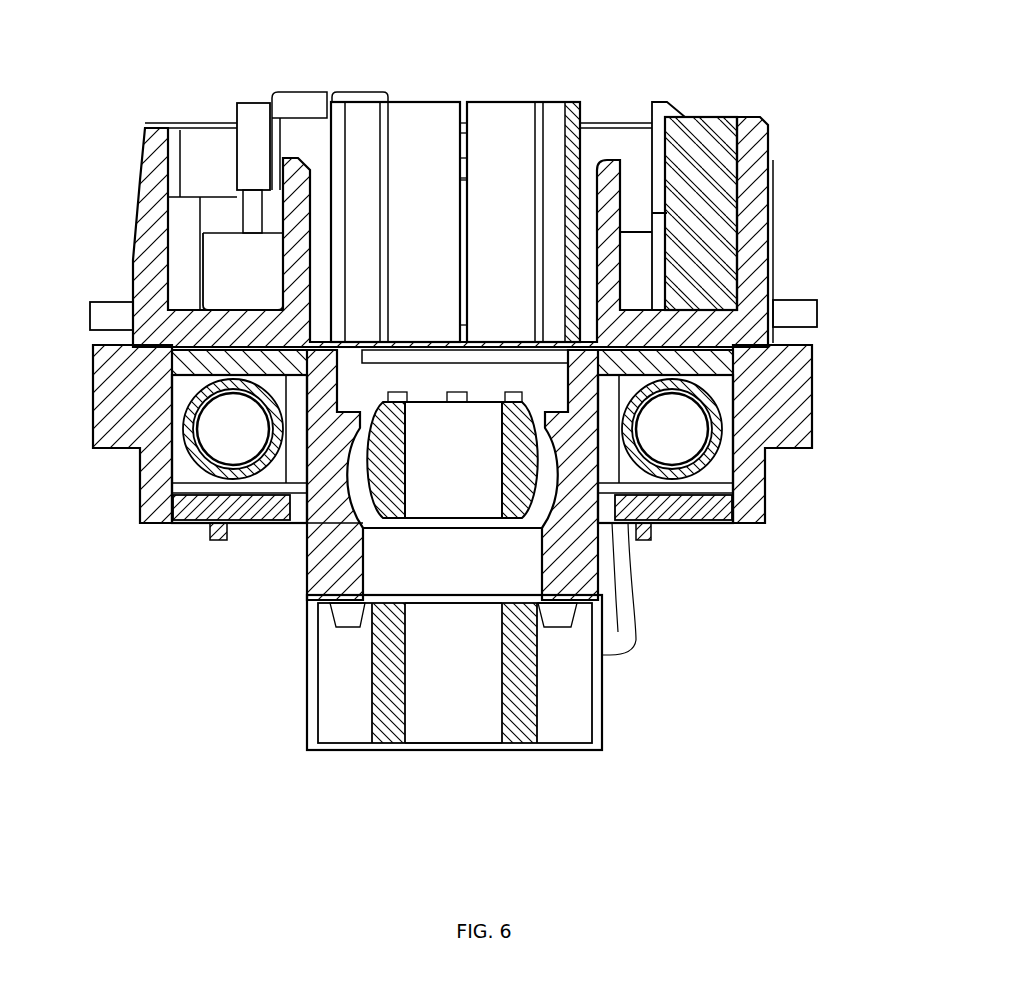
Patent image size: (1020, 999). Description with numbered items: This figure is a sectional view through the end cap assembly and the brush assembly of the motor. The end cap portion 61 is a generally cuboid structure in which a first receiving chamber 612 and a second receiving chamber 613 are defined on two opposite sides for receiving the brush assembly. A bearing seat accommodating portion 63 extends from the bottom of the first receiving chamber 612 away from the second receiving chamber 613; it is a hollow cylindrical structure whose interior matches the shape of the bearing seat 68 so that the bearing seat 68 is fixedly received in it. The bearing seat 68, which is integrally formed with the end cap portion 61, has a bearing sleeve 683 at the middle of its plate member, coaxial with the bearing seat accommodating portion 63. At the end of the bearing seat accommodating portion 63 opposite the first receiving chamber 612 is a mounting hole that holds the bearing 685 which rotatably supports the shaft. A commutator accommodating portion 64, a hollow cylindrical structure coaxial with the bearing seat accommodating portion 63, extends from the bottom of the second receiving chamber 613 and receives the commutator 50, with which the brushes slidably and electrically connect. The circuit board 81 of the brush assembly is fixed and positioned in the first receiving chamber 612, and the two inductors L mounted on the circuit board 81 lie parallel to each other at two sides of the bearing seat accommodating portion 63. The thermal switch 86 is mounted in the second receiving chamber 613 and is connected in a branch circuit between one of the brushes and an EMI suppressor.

The commutator 50 is at (502, 148).
The end cap portion 61 is at (735, 328).
The first receiving chamber 612 is at (723, 453).
The second receiving chamber 613 is at (206, 160).
The bearing seat accommodating portion 63 is at (560, 550).
The commutator accommodating portion 64 is at (627, 188).
The bearing seat 68 is at (715, 362).
The bearing sleeve 683 is at (318, 540).
The bearing 685 is at (392, 703).
The circuit board 81 is at (247, 523).
The thermal switch 86 is at (712, 215).
The inductor L is at (193, 432).